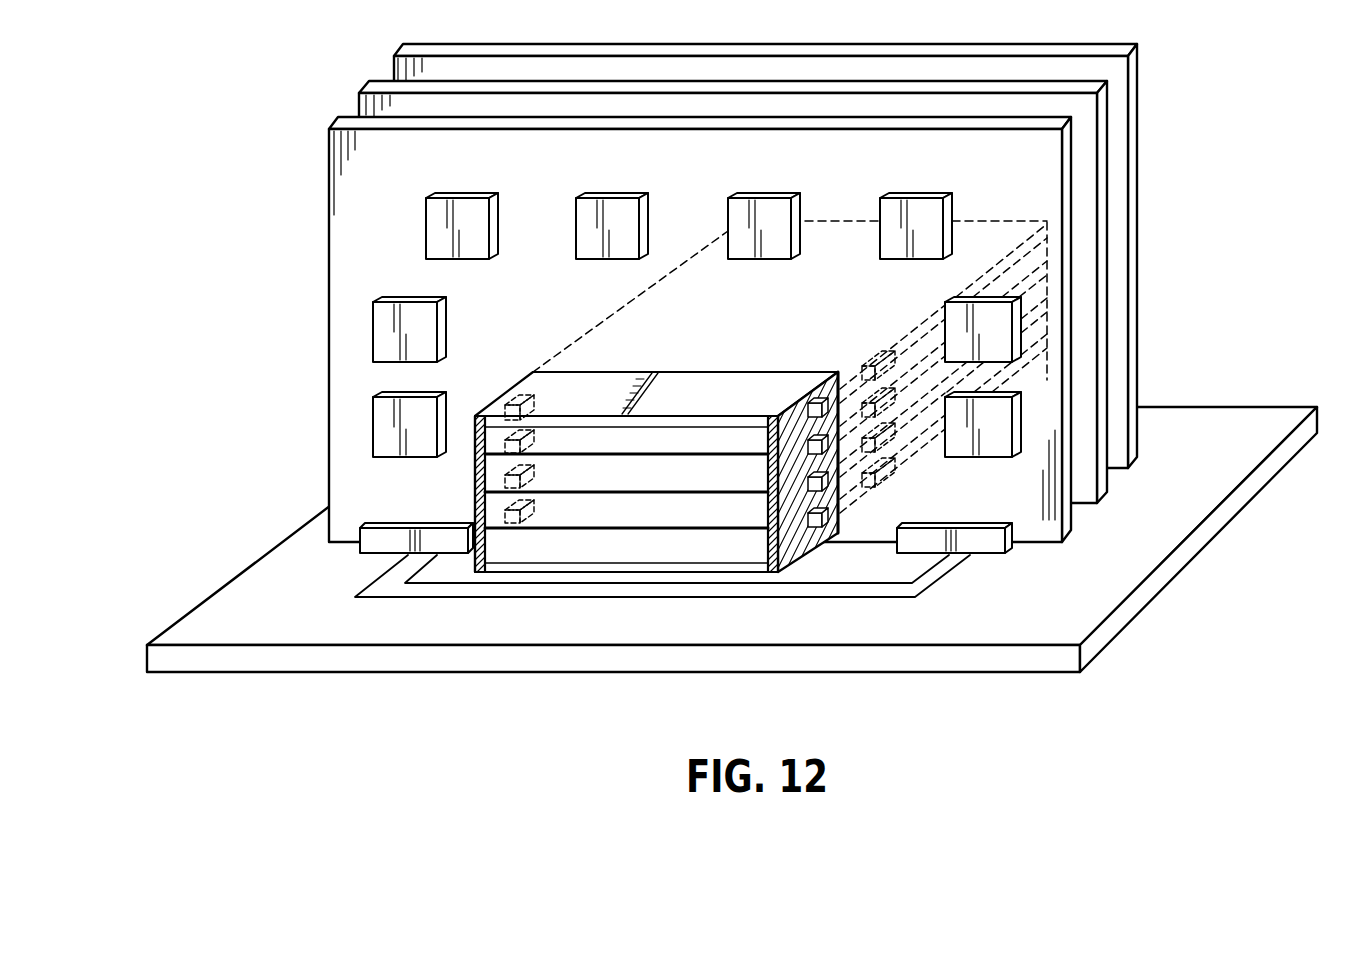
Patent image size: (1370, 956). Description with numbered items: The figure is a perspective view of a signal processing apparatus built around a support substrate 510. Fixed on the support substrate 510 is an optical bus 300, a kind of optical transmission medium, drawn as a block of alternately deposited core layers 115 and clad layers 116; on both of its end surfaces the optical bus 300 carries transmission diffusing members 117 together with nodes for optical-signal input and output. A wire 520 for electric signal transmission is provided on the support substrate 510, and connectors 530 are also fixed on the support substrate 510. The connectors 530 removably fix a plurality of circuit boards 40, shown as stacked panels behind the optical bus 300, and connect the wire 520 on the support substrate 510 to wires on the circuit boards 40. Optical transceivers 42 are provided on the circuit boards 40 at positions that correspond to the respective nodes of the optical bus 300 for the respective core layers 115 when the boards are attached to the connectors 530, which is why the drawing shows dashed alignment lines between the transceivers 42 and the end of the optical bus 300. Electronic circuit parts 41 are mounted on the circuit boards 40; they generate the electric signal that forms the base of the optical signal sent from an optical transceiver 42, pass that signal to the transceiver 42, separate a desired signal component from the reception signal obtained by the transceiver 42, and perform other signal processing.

The circuit boards 40 is at (1050, 182).
The electronic circuit parts 41 is at (377, 428).
The optical transceivers 42 is at (503, 437).
The core layers 115 is at (678, 477).
The clad layers 116 is at (750, 493).
The transmission diffusing members 117 is at (793, 403).
The optical bus 300 is at (593, 386).
The support substrate 510 is at (1258, 412).
The wire 520 is at (818, 586).
The connectors 530 is at (983, 543).